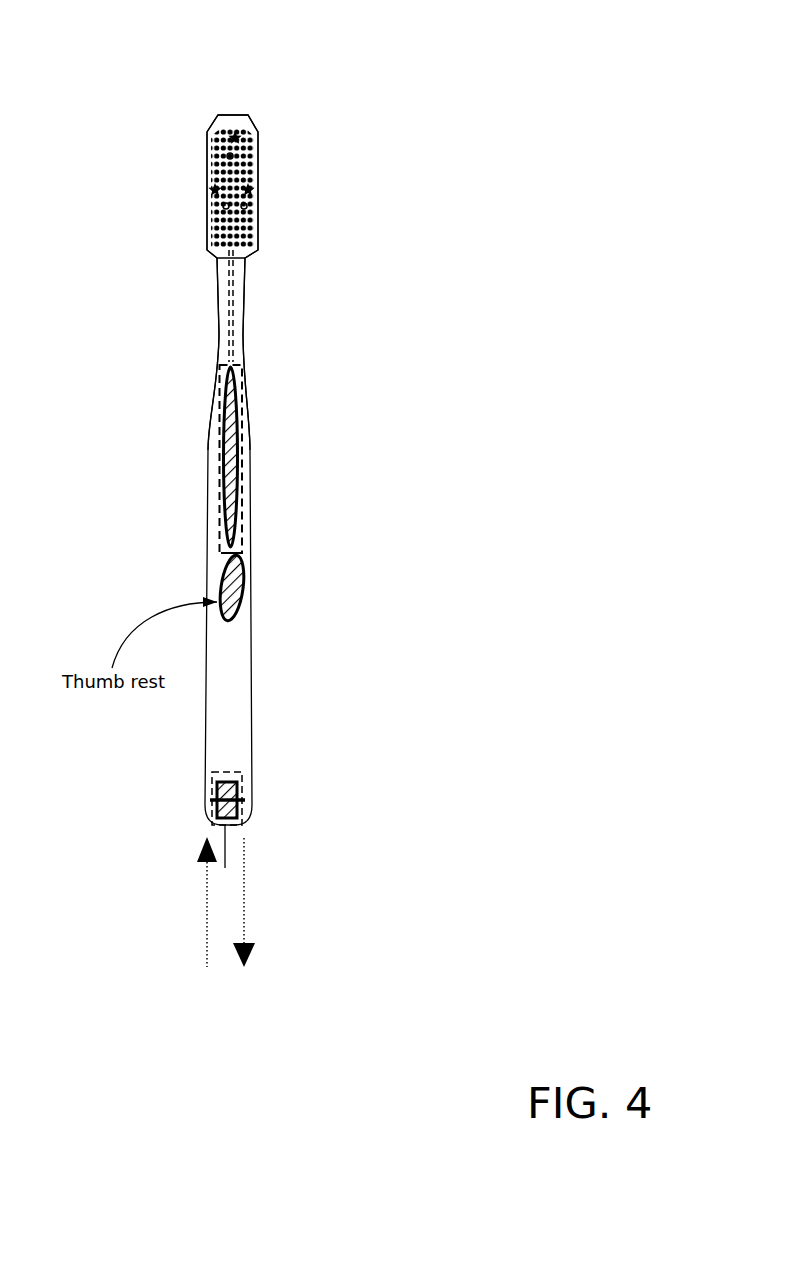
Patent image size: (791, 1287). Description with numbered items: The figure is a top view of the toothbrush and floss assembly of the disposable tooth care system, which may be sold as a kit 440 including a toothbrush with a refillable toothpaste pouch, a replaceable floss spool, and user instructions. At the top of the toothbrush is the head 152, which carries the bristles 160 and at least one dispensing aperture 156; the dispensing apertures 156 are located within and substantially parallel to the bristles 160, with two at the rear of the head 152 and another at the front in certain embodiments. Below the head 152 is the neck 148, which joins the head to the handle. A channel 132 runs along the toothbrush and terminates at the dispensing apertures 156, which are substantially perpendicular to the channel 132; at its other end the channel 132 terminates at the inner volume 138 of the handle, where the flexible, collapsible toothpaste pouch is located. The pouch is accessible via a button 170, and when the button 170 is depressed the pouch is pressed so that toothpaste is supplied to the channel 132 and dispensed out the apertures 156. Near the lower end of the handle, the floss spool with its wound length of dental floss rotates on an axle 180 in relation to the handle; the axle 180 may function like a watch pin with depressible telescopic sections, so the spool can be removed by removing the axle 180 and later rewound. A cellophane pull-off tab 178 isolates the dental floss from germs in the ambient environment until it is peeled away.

The kit 440 is at (488, 135).
The head 152 is at (225, 112).
The dispensing aperture 156 is at (237, 136).
The bristles 160 is at (253, 222).
The neck 148 is at (245, 275).
The channel 132 is at (240, 330).
The button 170 is at (245, 443).
The inner volume 138 is at (248, 555).
The cellophane pull-off tab 178 is at (245, 772).
The axle 180 is at (248, 800).